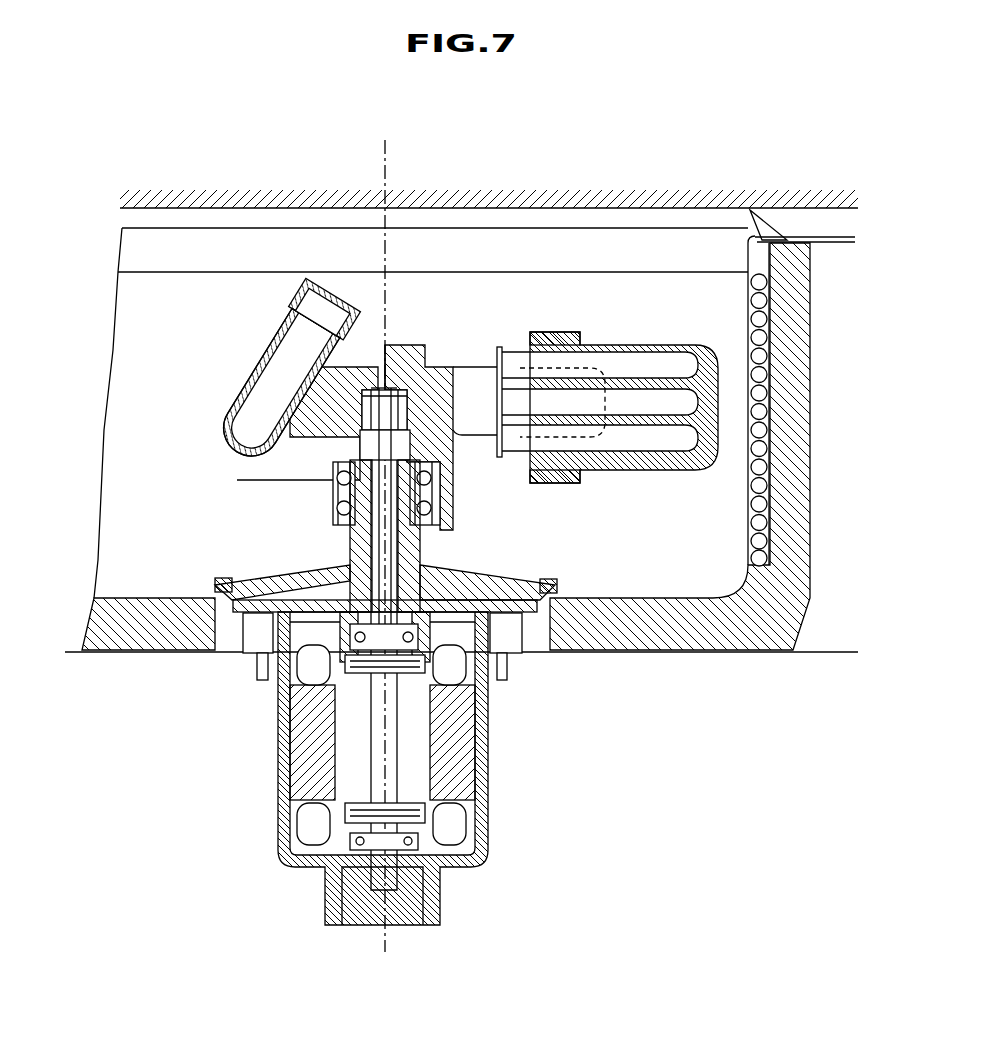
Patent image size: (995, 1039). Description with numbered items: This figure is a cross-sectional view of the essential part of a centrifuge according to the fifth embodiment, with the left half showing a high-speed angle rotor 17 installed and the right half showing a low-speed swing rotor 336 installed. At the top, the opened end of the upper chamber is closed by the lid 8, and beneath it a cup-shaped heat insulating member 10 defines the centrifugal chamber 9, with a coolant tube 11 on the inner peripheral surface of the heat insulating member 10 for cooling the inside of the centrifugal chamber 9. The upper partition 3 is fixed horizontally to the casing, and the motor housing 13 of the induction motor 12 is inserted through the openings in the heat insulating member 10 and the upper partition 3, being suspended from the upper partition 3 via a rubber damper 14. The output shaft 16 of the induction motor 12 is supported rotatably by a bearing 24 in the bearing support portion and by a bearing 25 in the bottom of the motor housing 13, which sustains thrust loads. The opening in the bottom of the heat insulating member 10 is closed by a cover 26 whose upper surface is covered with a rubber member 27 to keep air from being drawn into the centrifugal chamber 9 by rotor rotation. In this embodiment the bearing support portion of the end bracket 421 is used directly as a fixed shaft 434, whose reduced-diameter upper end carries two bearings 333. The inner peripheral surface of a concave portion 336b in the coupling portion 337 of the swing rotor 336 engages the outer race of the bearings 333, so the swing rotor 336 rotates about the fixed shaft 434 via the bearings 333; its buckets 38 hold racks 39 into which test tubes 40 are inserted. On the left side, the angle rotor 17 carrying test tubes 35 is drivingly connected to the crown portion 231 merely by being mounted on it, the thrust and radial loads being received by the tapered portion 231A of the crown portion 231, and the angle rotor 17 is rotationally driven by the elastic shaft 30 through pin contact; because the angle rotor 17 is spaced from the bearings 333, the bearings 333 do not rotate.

The upper partition 3 is at (808, 656).
The lid 8 is at (657, 197).
The centrifugal chamber 9 is at (677, 293).
The heat insulating member 10 is at (790, 373).
The coolant tube 11 is at (770, 303).
The induction motor 12 is at (382, 778).
The motor housing 13 is at (488, 845).
The damper 14 is at (258, 636).
The output shaft 16 is at (355, 750).
The angle rotor 17 is at (231, 290).
The bearing 24 is at (405, 640).
The bearing 25 is at (360, 845).
The cover 26 is at (233, 595).
The rubber member 27 is at (207, 577).
The elastic shaft 30 is at (387, 533).
The test tube 35 is at (311, 318).
The bucket 38 is at (552, 332).
The rack 39 is at (627, 467).
The test tube 40 is at (500, 458).
The crown portion 231 is at (327, 453).
The tapered portion 231A is at (358, 428).
The bearings 333 is at (333, 483).
The swing rotor 336 is at (462, 365).
The concave portion 336b is at (440, 480).
The coupling portion 337 is at (437, 345).
The end bracket 421 is at (410, 553).
The fixed shaft 434 is at (360, 540).